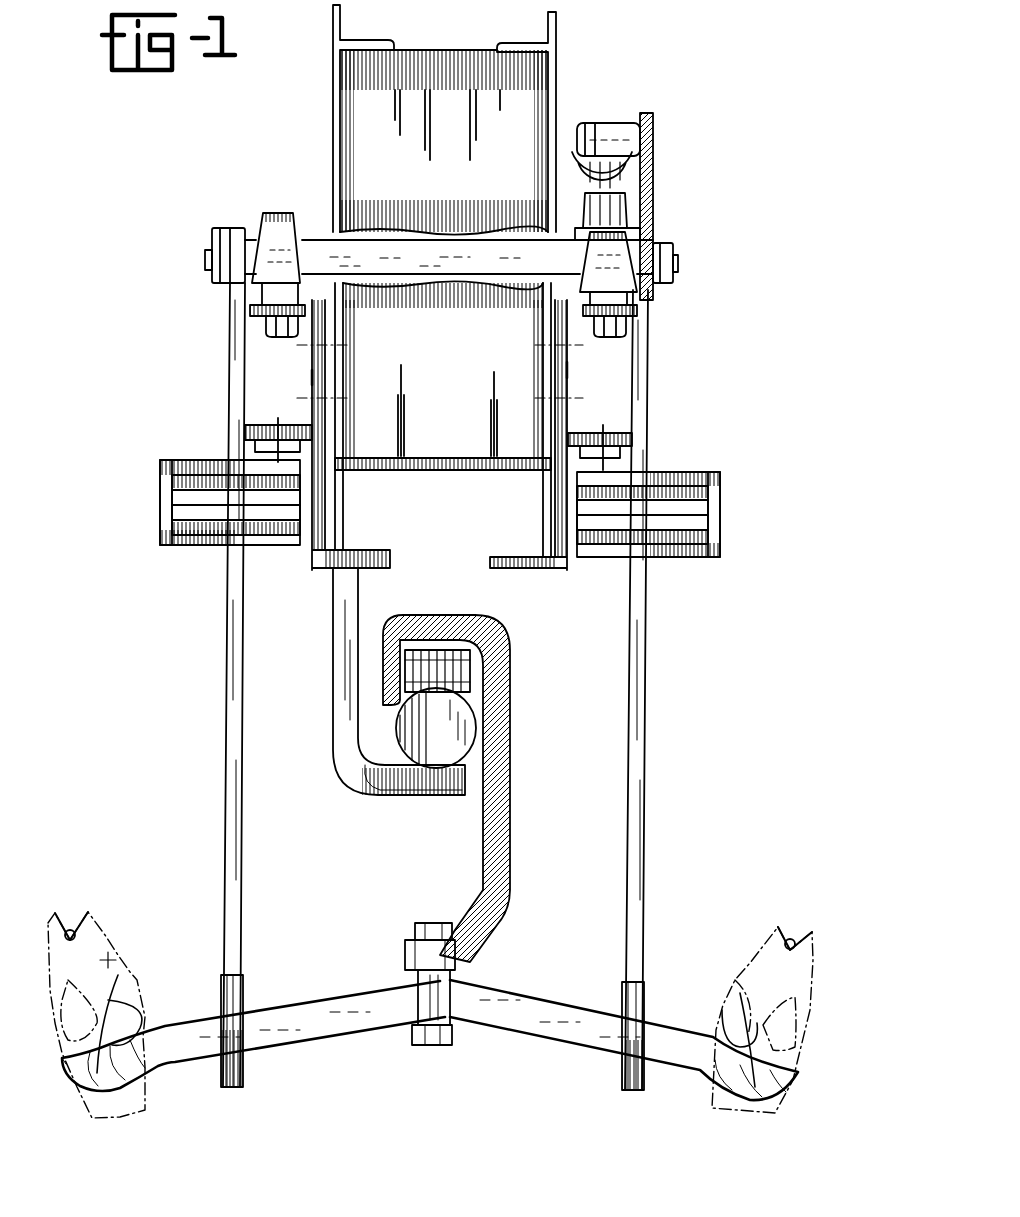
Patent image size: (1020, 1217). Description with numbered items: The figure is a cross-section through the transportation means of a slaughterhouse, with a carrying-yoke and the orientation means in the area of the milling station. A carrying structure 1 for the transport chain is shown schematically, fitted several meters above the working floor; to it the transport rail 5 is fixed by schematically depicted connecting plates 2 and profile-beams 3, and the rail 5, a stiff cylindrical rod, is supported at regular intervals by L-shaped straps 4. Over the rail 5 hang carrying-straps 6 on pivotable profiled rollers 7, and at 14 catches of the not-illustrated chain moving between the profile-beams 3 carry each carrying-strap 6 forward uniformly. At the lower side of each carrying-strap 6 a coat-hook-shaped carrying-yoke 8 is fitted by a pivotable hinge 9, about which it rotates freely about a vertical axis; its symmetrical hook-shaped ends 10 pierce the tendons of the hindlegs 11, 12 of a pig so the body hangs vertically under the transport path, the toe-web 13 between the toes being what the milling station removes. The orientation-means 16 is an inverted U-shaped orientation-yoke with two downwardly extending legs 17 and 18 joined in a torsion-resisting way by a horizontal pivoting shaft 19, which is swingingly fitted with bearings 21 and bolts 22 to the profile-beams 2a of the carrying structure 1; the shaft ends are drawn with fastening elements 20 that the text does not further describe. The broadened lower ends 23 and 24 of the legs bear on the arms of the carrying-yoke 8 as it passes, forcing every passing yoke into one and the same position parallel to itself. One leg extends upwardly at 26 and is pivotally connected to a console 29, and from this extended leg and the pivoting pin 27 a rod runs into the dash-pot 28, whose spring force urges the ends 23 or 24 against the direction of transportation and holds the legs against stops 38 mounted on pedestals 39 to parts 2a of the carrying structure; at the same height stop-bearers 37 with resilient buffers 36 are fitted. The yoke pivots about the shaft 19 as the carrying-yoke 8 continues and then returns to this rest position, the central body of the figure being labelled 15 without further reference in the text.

The carrying structure 1 is at (565, 82).
The connecting plates 2 is at (323, 327).
The profile-beams 2a is at (312, 378).
The profile-beams 3 is at (398, 463).
The L-shaped straps 4 is at (346, 648).
The transport rail 5 is at (455, 727).
The carrying-straps 6 is at (495, 790).
The profiled rollers 7 is at (458, 672).
The carrying-yoke 8 is at (545, 1010).
The pivotable hinge 9 is at (427, 993).
The hook-shaped ends 10 is at (140, 1008).
The hindleg 11 is at (120, 958).
The hindleg 12 is at (772, 965).
The toe-web 13 is at (71, 930).
The transport means 14 is at (433, 612).
The container 15 is at (443, 419).
The orientation-means 16 is at (712, 262).
The leg 17 is at (235, 722).
The leg 18 is at (640, 843).
The pivoting shaft 19 is at (322, 250).
The nut 20 is at (215, 280).
The bearings 21 is at (276, 212).
The bolts 22 is at (262, 280).
The end of orientation-yoke 23 is at (622, 1070).
The end of orientation-yoke 24 is at (244, 1061).
The extended leg 26 is at (654, 190).
The pivoting pin 27 is at (605, 140).
The dash-pot 28 is at (572, 160).
The console 29 is at (630, 213).
The resilient buffers 36 is at (423, 509).
The stop-bearers 37 is at (423, 509).
The stops 38 is at (172, 484).
The pedestals 39 is at (252, 446).